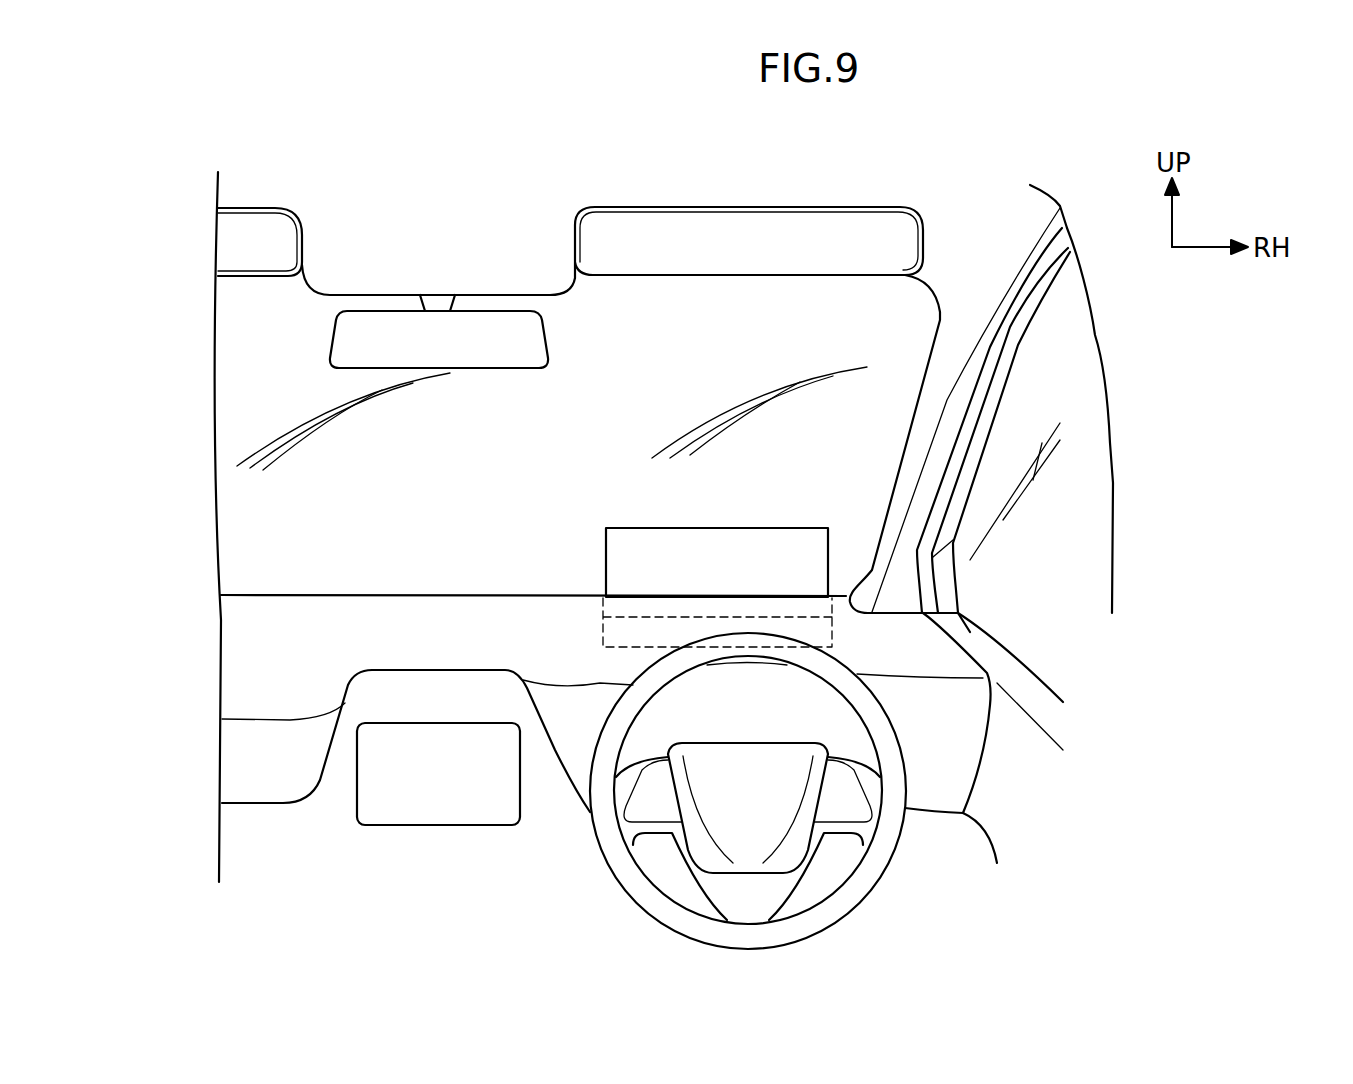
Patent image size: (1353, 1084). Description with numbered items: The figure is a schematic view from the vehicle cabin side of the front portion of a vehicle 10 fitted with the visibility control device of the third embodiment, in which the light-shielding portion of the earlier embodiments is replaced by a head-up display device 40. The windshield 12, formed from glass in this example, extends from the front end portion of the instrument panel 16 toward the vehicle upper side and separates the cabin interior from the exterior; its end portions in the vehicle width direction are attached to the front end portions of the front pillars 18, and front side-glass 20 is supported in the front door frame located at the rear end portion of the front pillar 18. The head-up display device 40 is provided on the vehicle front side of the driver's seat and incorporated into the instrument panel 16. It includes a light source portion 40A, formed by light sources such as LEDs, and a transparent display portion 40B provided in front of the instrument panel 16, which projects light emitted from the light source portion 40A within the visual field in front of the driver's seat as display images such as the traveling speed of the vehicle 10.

The vehicle 10 is at (198, 184).
The windshield 12 is at (235, 341).
The instrument panel 16 is at (405, 618).
The front pillar 18 is at (1010, 290).
The front side-glass 20 is at (1080, 448).
The head-up display device 40 is at (662, 560).
The light source portion 40A is at (660, 605).
The transparent display portion 40B is at (708, 535).